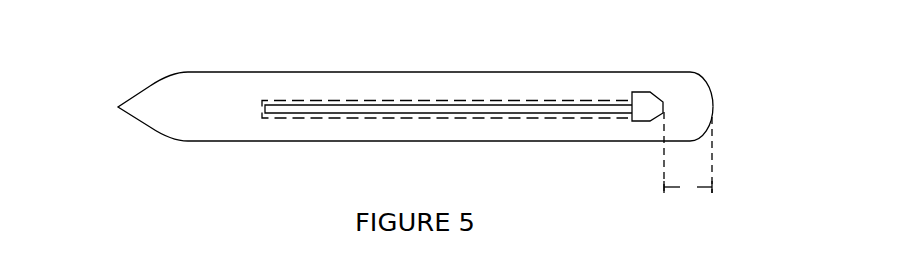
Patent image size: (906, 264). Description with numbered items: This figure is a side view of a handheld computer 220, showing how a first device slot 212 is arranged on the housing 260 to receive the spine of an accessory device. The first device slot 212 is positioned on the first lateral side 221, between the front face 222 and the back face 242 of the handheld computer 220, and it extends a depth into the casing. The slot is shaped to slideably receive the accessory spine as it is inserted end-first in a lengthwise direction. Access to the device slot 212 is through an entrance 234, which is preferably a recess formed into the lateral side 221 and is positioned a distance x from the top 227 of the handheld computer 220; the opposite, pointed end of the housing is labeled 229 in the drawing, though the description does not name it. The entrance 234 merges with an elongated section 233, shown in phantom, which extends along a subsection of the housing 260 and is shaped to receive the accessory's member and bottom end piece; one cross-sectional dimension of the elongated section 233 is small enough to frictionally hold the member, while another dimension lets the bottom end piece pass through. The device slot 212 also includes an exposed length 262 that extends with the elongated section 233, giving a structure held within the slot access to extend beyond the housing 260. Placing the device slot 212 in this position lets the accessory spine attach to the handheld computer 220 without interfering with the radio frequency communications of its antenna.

The handheld computer 220 is at (741, 107).
The first device slot 212 is at (427, 85).
The tip end 229 is at (118, 107).
The first lateral side 221 is at (188, 124).
The front face 222 is at (367, 72).
The back face 242 is at (507, 141).
The housing 260 is at (688, 97).
The top 227 is at (712, 115).
The exposed length 262 is at (323, 106).
The elongated section 233 is at (615, 100).
The entrance 234 is at (645, 108).